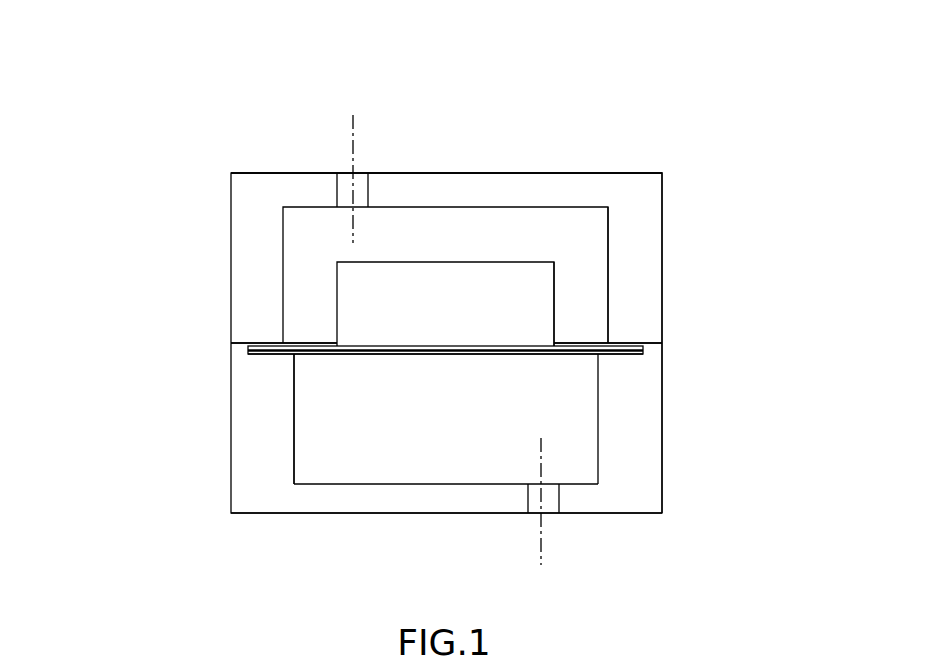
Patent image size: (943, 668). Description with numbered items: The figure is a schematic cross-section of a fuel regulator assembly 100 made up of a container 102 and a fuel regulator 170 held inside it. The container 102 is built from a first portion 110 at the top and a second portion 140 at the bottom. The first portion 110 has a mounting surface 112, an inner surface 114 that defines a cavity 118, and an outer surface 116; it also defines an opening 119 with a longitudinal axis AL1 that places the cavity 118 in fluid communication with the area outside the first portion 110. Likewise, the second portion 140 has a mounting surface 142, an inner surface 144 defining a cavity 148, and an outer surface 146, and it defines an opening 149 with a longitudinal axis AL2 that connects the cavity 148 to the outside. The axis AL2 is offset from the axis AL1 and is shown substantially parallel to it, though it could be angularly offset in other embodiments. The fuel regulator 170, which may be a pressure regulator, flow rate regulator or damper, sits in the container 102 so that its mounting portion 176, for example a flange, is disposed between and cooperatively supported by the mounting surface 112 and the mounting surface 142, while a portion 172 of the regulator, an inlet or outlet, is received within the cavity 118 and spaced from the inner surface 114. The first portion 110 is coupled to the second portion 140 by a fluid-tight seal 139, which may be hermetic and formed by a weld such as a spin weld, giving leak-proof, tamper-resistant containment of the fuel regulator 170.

The fuel regulator assembly 100 is at (136, 56).
The container 102 is at (231, 213).
The first portion 110 is at (480, 187).
The mounting surface 112 is at (278, 342).
The inner surface 114 is at (283, 242).
The outer surface 116 is at (260, 173).
The cavity 118 is at (510, 225).
The opening 119 is at (343, 180).
The longitudinal axis AL1 is at (355, 133).
The fluid-tight seal 139 is at (249, 345).
The second portion 140 is at (335, 505).
The mounting surface 142 is at (277, 357).
The inner surface 144 is at (294, 452).
The outer surface 146 is at (662, 498).
The cavity 148 is at (532, 405).
The opening 149 is at (547, 505).
The longitudinal axis AL2 is at (541, 527).
The fuel regulator 170 is at (523, 278).
The portion 172 is at (530, 298).
The mounting portion 176 is at (258, 356).